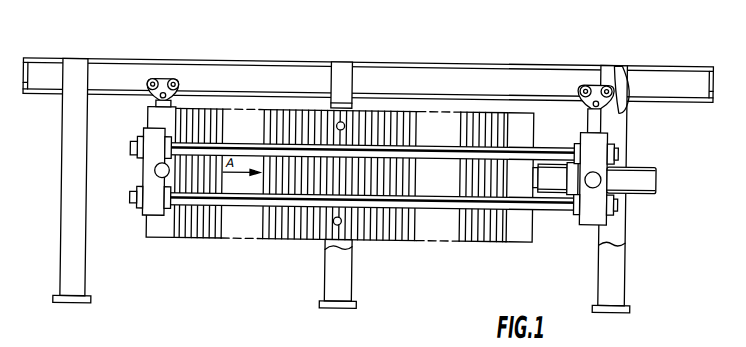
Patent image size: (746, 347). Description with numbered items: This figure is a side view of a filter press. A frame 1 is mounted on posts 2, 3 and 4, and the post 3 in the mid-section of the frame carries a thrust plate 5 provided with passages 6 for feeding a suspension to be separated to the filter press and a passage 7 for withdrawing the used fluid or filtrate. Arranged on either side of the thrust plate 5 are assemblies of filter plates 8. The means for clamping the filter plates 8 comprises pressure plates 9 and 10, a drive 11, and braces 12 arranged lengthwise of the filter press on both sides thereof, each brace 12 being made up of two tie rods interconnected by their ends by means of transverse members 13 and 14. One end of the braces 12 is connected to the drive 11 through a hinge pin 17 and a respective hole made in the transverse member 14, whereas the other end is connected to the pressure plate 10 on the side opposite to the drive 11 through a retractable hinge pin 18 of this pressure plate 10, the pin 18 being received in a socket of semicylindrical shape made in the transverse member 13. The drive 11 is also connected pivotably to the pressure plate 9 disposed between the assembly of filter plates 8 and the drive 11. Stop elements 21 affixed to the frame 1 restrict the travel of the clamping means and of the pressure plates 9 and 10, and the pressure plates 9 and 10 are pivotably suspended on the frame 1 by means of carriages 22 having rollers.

The frame 1 is at (474, 77).
The post 2 is at (69, 255).
The post 3 is at (343, 283).
The post 4 is at (619, 262).
The thrust plate 5 is at (339, 121).
The passage 6 is at (349, 112).
The passage 7 is at (337, 226).
The filter plates 8 is at (286, 116).
The pressure plate 9 is at (530, 135).
The pressure plate 10 is at (171, 113).
The drive 11 is at (643, 170).
The brace 12 is at (427, 201).
The transverse member 13 is at (142, 180).
The transverse member 14 is at (613, 190).
The hinge pin 17 is at (612, 161).
The retractable hinge pin 18 is at (158, 167).
The stop element 21 is at (32, 76).
The carriage 22 is at (162, 84).